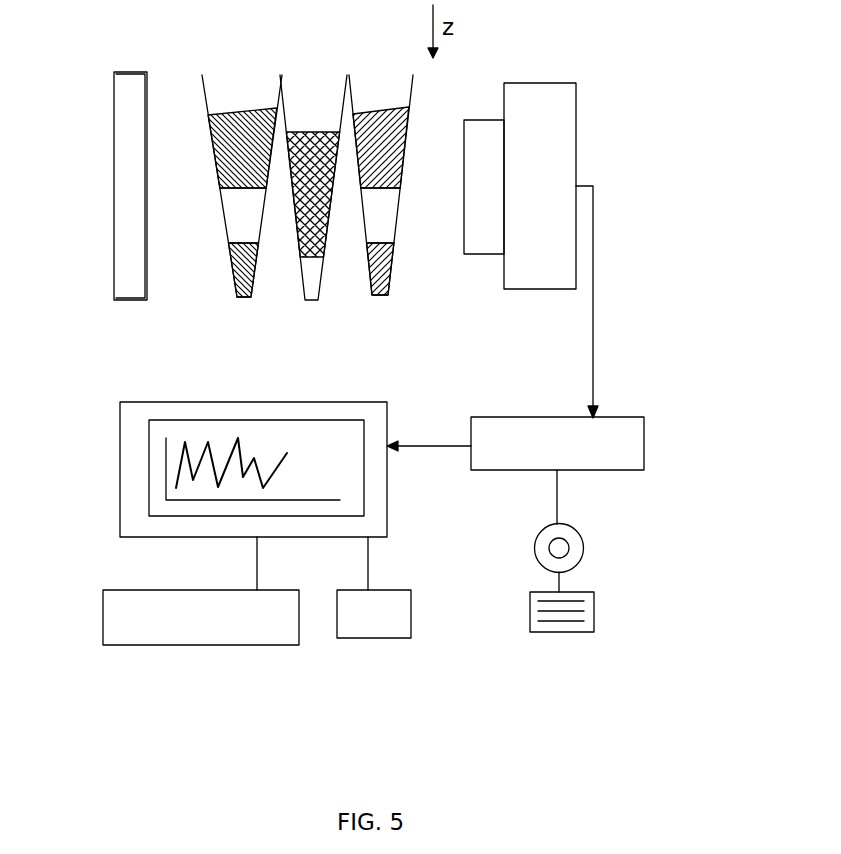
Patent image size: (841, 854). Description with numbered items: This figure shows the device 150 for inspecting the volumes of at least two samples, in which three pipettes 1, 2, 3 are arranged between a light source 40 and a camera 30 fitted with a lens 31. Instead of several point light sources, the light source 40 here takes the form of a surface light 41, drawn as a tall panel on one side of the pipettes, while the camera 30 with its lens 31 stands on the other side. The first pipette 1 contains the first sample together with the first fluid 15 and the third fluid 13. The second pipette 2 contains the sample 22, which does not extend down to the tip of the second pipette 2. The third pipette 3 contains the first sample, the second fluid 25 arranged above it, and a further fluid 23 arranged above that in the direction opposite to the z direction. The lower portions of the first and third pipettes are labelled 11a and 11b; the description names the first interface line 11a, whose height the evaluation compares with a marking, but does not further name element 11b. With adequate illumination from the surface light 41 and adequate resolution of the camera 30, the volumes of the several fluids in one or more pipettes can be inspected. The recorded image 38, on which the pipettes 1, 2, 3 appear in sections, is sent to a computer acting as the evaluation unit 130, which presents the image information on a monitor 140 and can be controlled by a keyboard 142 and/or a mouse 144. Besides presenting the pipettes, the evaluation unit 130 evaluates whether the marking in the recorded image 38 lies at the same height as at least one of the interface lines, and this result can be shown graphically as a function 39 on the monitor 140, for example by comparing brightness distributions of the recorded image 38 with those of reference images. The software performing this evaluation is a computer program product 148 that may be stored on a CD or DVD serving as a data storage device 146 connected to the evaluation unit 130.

The first pipette 1 is at (242, 66).
The second pipette 2 is at (315, 65).
The third pipette 3 is at (384, 62).
The first interface line 11a is at (250, 265).
The bottom portion of third container 11b is at (390, 265).
The third fluid 13 is at (211, 141).
The first fluid 15 is at (243, 208).
The sample 22 is at (333, 225).
The further fluid 23 is at (403, 140).
The second fluid 25 is at (380, 212).
The camera 30 is at (540, 62).
The lens 31 is at (473, 136).
The recorded image 38 is at (364, 478).
The function 39 is at (238, 442).
The light source 40 is at (88, 268).
The surface light 41 is at (131, 275).
The evaluation unit 130 is at (515, 435).
The monitor 140 is at (176, 402).
The keyboard 142 is at (190, 607).
The mouse 144 is at (390, 603).
The data storage device 146 is at (570, 533).
The computer program product 148 is at (572, 592).
The device 150 is at (622, 52).